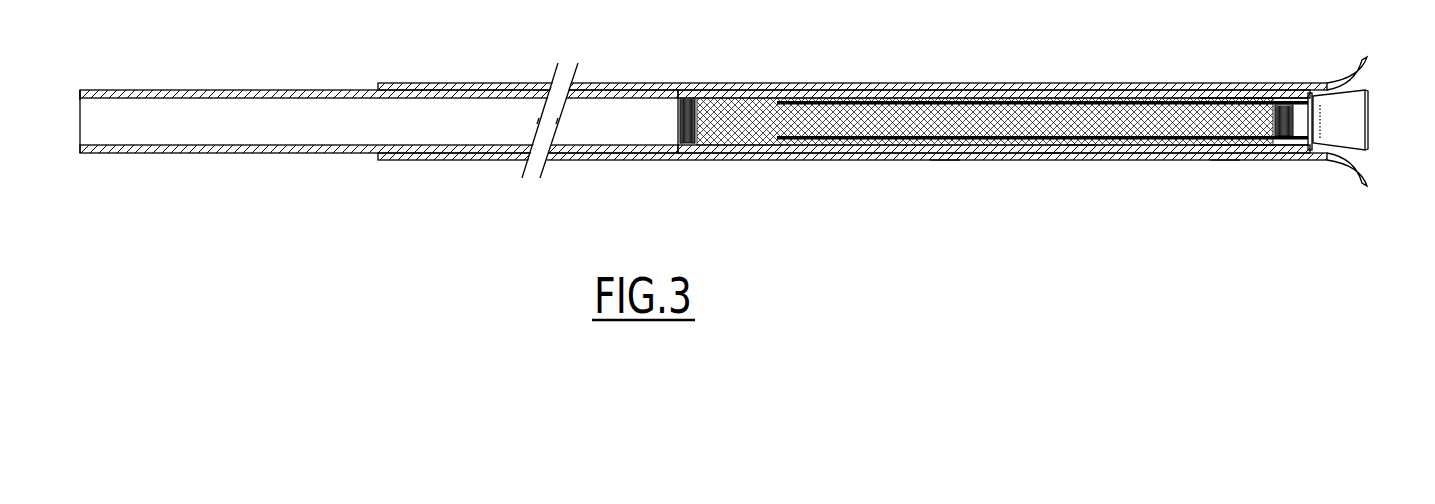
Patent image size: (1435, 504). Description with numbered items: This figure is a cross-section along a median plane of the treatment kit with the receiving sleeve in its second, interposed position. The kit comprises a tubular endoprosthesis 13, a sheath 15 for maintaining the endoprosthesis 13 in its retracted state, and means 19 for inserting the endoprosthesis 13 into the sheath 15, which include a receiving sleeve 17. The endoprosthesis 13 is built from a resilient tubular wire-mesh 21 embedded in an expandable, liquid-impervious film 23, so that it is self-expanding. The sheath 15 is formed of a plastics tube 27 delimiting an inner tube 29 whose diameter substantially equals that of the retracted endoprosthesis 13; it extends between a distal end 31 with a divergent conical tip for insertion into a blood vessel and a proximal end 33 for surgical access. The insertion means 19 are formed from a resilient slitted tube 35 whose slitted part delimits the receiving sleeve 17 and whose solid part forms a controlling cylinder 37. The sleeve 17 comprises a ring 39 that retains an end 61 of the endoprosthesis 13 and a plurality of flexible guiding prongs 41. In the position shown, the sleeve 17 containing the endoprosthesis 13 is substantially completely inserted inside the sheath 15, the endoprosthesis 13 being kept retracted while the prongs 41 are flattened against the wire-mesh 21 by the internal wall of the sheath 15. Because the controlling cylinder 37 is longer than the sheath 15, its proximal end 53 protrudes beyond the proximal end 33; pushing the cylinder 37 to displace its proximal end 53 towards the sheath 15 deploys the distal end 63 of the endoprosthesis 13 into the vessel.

The tubular endoprosthesis 13 is at (1077, 148).
The sheath 15 is at (1225, 158).
The receiving sleeve 17 is at (817, 153).
The means for inserting the endoprosthesis 19 is at (213, 154).
The tubular wire-mesh 21 is at (1142, 118).
The expandable film 23 is at (947, 115).
The tube 27 is at (944, 160).
The inner tube 29 is at (1044, 150).
The distal end 31 is at (1343, 77).
The proximal end 33 is at (378, 86).
The resilient tube 35 is at (707, 148).
The controlling cylinder 37 is at (636, 118).
The ring 39 is at (752, 115).
The flexible guiding prongs 41 is at (1230, 97).
The proximal end of the controlling cylinder 53 is at (79, 93).
The end of the endoprosthesis 61 is at (677, 120).
The distal end of the endoprosthesis 63 is at (1297, 107).